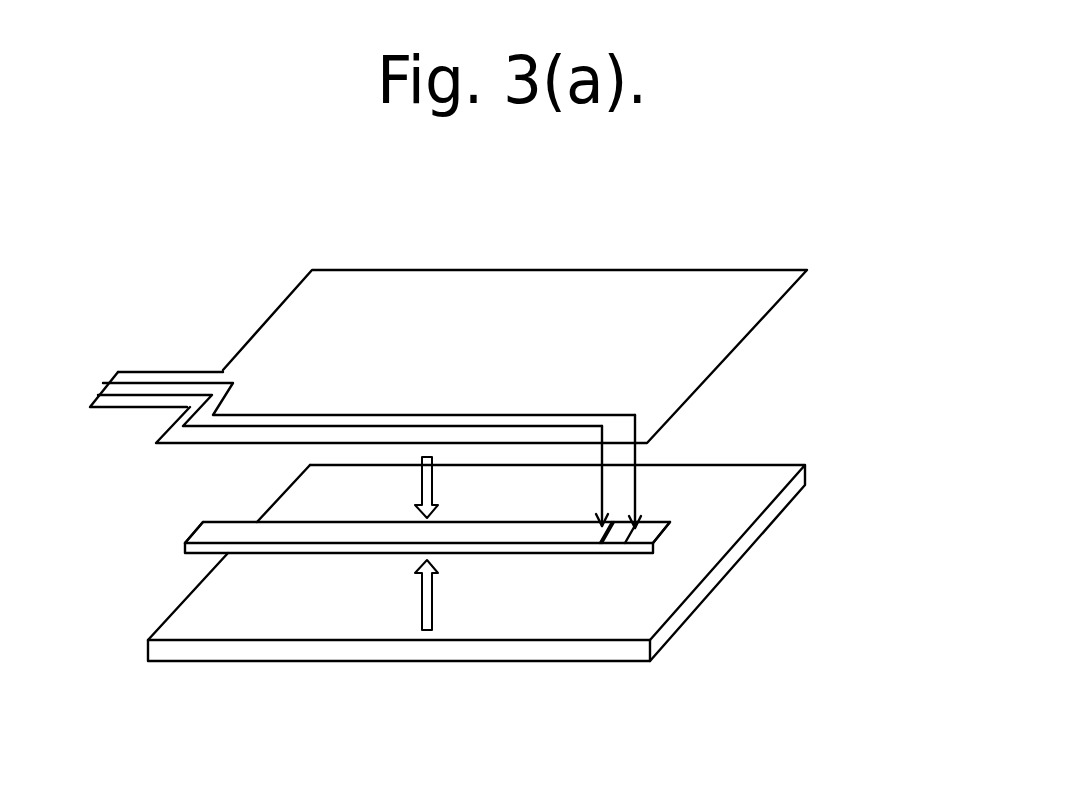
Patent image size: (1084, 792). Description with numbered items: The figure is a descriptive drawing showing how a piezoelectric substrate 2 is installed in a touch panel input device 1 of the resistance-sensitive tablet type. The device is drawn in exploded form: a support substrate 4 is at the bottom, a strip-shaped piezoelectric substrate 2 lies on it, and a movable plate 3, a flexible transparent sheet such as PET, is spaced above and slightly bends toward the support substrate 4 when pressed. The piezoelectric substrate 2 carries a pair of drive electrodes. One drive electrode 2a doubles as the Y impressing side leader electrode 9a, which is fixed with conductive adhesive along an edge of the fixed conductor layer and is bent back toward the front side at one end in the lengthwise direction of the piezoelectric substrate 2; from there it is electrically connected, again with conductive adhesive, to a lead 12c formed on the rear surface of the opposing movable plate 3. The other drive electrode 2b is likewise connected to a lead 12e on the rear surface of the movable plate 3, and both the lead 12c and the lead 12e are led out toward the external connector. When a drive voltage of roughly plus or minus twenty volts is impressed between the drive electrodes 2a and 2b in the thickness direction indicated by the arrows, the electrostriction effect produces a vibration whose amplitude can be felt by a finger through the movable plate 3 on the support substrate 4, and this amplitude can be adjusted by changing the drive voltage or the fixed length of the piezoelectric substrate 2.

The touch panel input device 1 is at (813, 400).
The piezoelectric substrate 2 is at (190, 549).
The drive electrode 2a is at (605, 553).
The Y impressing side leader electrode 9a is at (647, 532).
The drive electrode 2b is at (212, 533).
The movable plate 3 is at (723, 303).
The support substrate 4 is at (780, 515).
The lead 12c is at (622, 413).
The lead 12e is at (408, 413).